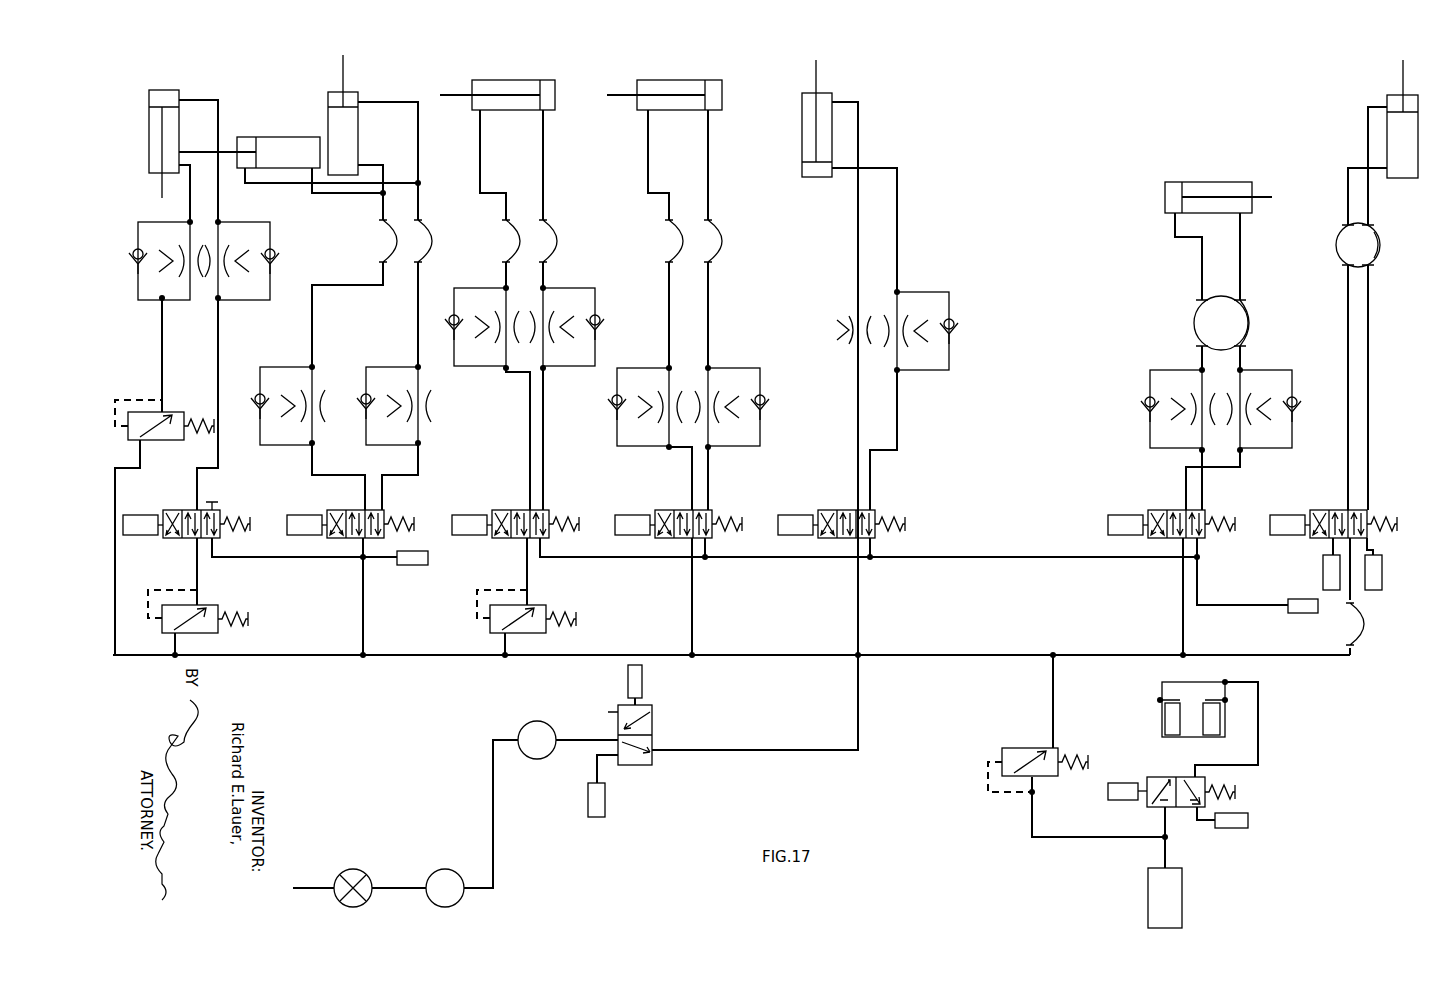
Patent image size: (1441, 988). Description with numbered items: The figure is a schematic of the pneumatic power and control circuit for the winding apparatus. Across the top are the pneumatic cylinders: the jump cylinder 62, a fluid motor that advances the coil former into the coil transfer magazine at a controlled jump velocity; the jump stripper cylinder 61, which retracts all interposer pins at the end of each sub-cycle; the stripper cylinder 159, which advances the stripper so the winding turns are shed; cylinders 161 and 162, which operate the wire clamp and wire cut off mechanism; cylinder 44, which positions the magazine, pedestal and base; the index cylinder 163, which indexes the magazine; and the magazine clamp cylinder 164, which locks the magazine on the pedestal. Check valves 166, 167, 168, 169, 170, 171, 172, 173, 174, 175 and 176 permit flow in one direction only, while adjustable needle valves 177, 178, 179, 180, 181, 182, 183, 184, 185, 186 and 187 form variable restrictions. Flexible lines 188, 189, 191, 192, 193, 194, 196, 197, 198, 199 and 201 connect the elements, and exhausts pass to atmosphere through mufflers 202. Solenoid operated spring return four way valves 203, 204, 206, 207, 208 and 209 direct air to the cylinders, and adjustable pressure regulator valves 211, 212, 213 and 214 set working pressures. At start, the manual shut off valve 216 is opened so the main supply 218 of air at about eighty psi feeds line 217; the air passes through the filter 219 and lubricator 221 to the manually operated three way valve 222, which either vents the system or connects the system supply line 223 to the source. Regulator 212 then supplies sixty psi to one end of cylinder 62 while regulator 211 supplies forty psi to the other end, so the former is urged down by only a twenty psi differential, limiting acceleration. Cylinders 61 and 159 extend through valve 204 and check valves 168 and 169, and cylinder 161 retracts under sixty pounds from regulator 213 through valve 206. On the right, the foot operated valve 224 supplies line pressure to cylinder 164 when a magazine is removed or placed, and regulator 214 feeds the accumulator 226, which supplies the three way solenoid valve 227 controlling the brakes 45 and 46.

The cylinder 44 is at (824, 93).
The brake 45 is at (1160, 696).
The brake 46 is at (1201, 726).
The jump stripper cylinder 61 is at (270, 136).
The jump cylinder 62 is at (166, 91).
The stripper cylinder 159 is at (350, 92).
The cylinder 161 is at (524, 80).
The cylinder 162 is at (685, 80).
The index cylinder 163 is at (1210, 182).
The magazine clamp cylinder 164 is at (1393, 95).
The check valve 166 is at (135, 250).
The check valve 167 is at (275, 251).
The check valve 168 is at (257, 394).
The check valve 169 is at (362, 394).
The check valve 170 is at (451, 316).
The check valve 171 is at (598, 316).
The check valve 172 is at (612, 396).
The check valve 173 is at (767, 398).
The check valve 174 is at (955, 320).
The check valve 175 is at (1298, 398).
The check valve 176 is at (1145, 398).
The adjustable needle valve 177 is at (172, 252).
The adjustable needle valve 178 is at (245, 254).
The adjustable needle valve 179 is at (298, 400).
The adjustable needle valve 180 is at (510, 316).
The adjustable needle valve 181 is at (426, 407).
The adjustable needle valve 182 is at (652, 402).
The adjustable needle valve 183 is at (725, 402).
The adjustable needle valve 184 is at (852, 318).
The adjustable needle valve 185 is at (551, 316).
The adjustable needle valve 186 is at (1176, 403).
The adjustable needle valve 187 is at (1280, 404).
The flexible line 188 is at (381, 240).
The flexible line 189 is at (430, 240).
The flexible line 191 is at (514, 243).
The flexible line 192 is at (556, 241).
The flexible line 193 is at (676, 242).
The flexible line 194 is at (722, 241).
The flexible line 196 is at (1192, 325).
The flexible line 197 is at (1250, 323).
The flexible line 198 is at (1337, 242).
The flexible line 199 is at (1381, 245).
The flexible line 201 is at (1366, 628).
The muffler 202 is at (413, 566).
The solenoid operated spring return four way valve 203 is at (214, 509).
The solenoid operated spring return four way valve 204 is at (382, 510).
The solenoid operated spring return four way valve 206 is at (547, 510).
The solenoid operated spring return four way valve 207 is at (712, 513).
The solenoid operated spring return four way valve 208 is at (878, 512).
The solenoid operated spring return four way valve 209 is at (1206, 510).
The pressure regulator valve 211 is at (166, 412).
The pressure regulator valve 212 is at (214, 605).
The pressure regulator valve 213 is at (550, 606).
The pressure regulator valve 214 is at (1001, 748).
The manual shut off valve 216 is at (356, 870).
The line 217 is at (392, 886).
The main supply 218 is at (304, 886).
The filter 219 is at (447, 869).
The lubricator 221 is at (540, 721).
The manually operated three way valve 222 is at (653, 724).
The system supply line 223 is at (860, 710).
The foot operated valve 224 is at (1369, 510).
The accumulator 226 is at (1182, 893).
The three way solenoid operated spring return valve 227 is at (1152, 777).